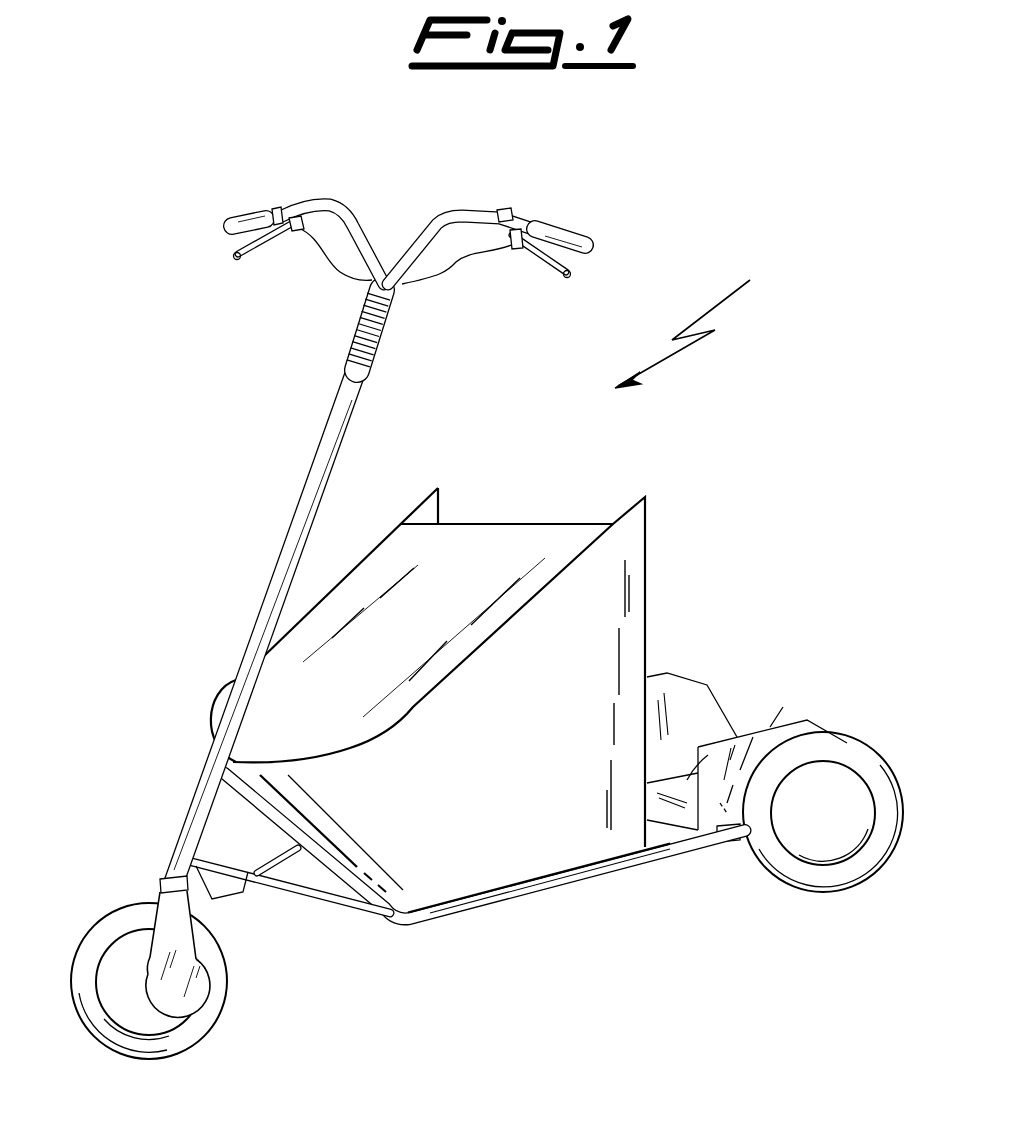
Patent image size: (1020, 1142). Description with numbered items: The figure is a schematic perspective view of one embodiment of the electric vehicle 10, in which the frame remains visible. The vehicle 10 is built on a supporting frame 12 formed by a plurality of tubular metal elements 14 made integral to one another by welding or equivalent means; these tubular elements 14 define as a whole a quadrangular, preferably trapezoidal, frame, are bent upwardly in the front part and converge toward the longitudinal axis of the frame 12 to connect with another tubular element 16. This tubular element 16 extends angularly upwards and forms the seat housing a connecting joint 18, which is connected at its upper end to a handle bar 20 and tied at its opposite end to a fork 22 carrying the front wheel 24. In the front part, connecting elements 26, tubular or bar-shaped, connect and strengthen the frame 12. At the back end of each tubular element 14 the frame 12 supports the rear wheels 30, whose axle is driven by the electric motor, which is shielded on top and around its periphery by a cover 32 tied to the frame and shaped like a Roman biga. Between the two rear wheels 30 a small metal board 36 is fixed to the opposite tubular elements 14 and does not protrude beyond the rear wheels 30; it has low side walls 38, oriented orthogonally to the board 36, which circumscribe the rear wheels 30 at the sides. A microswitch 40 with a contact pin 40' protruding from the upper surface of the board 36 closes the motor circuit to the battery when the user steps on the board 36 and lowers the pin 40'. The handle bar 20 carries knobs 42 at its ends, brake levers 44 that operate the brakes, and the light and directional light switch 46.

The electric vehicle 10 is at (706, 324).
The supporting frame 12 is at (612, 890).
The tubular metal elements 14 is at (460, 915).
The tubular element 16 is at (318, 484).
The connecting joint 18 is at (350, 333).
The handle bar 20 is at (338, 205).
The fork 22 is at (160, 883).
The front wheel 24 is at (164, 1052).
The connecting elements 26 is at (307, 897).
The rear wheels 30 is at (860, 865).
The cover 32 is at (636, 541).
The metal board 36 is at (687, 780).
The side walls 38 is at (685, 690).
The microswitch 40 is at (738, 876).
The contact pin 40' is at (787, 706).
The knobs 42 is at (238, 218).
The brake levers 44 is at (240, 260).
The light and directional light switch 46 is at (506, 210).